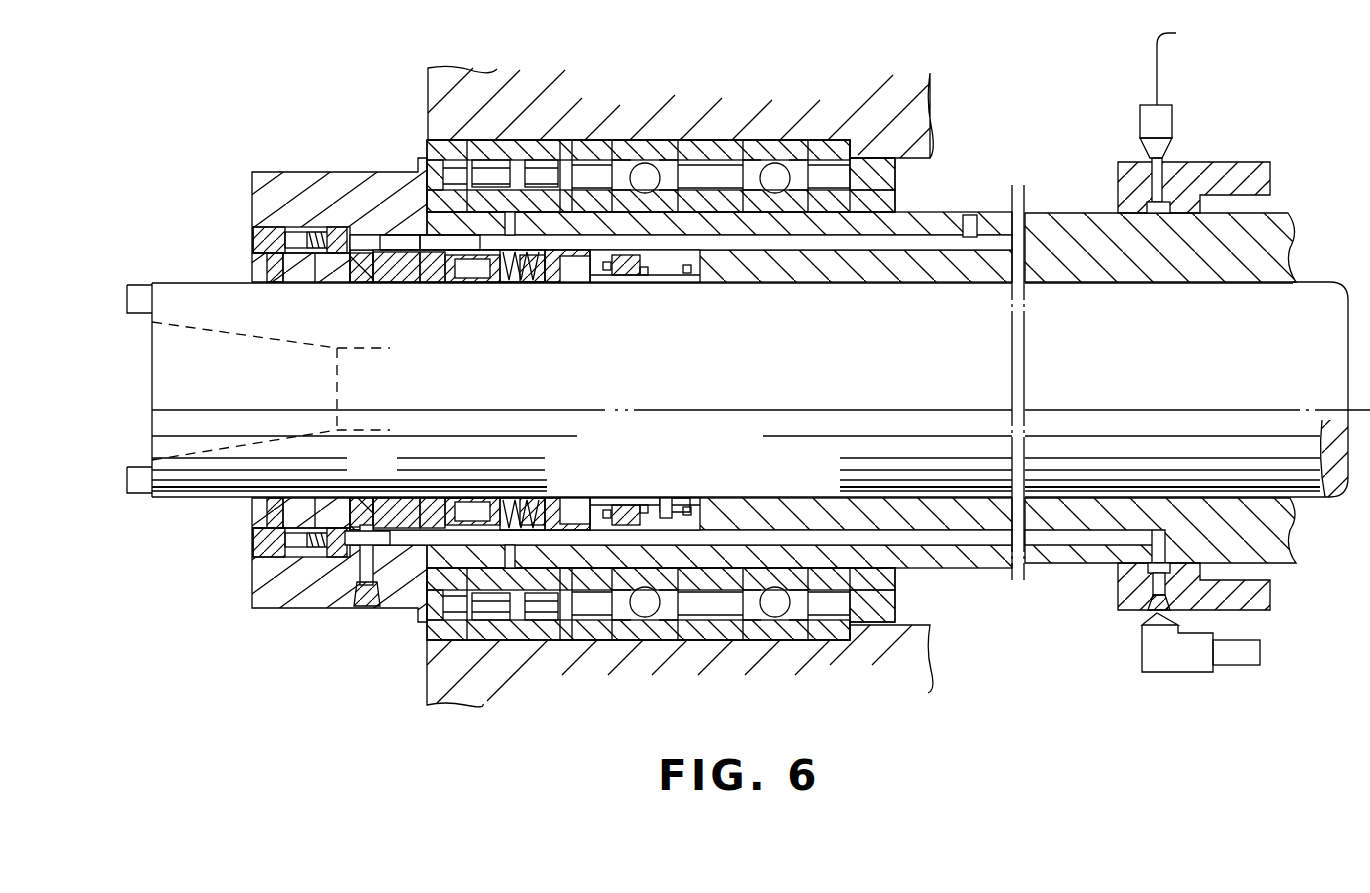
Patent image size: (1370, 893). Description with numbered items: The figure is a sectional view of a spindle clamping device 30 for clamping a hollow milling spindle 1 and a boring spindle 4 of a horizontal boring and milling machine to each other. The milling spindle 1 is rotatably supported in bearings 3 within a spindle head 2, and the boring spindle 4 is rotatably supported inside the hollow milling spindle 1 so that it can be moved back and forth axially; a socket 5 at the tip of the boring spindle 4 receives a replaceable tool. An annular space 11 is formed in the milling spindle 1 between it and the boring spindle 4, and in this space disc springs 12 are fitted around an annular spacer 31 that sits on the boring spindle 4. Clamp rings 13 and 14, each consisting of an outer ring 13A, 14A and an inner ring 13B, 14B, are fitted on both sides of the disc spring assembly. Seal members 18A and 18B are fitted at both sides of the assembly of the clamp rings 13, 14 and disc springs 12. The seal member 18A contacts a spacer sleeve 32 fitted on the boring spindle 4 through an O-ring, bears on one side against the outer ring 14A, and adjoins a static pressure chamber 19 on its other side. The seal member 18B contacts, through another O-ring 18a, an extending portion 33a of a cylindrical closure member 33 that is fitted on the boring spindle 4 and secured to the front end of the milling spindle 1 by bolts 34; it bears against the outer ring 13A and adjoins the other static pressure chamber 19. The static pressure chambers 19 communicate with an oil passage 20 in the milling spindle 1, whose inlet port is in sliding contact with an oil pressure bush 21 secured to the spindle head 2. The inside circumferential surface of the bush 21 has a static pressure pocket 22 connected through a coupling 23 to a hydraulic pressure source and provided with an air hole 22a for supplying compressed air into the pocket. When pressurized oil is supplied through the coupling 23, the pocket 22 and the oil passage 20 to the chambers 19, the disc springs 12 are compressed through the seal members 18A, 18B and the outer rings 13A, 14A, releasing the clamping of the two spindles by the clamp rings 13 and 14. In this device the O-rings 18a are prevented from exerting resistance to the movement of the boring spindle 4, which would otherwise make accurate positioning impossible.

The milling spindle 1 is at (262, 178).
The spindle head 2 is at (440, 85).
The bearings 3 is at (530, 632).
The boring spindle 4 is at (200, 295).
The socket 5 is at (192, 334).
The annular space 11 is at (470, 282).
The disc springs 12 is at (525, 280).
The clamp ring 13 is at (487, 290).
The outer ring 13A is at (455, 262).
The inner ring 13B is at (440, 280).
The clamp ring 14 is at (588, 292).
The outer ring 14A is at (567, 260).
The inner ring 14B is at (585, 285).
The seal member 18A is at (650, 280).
The seal member 18B is at (403, 255).
The O-ring 18a is at (615, 505).
The static pressure chambers 19 is at (365, 510).
The oil passage 20 is at (928, 237).
The oil pressure bush 21 is at (1258, 608).
The static pressure pocket 22 is at (1150, 570).
The air hole 22a is at (1150, 180).
The coupling 23 is at (1145, 657).
The spindle clamping device 30 is at (530, 293).
The annular spacer 31 is at (522, 287).
The spacer sleeve 32 is at (700, 282).
The cylindrical closure member 33 is at (318, 278).
The extending portion 33a is at (380, 280).
The bolts 34 is at (265, 235).